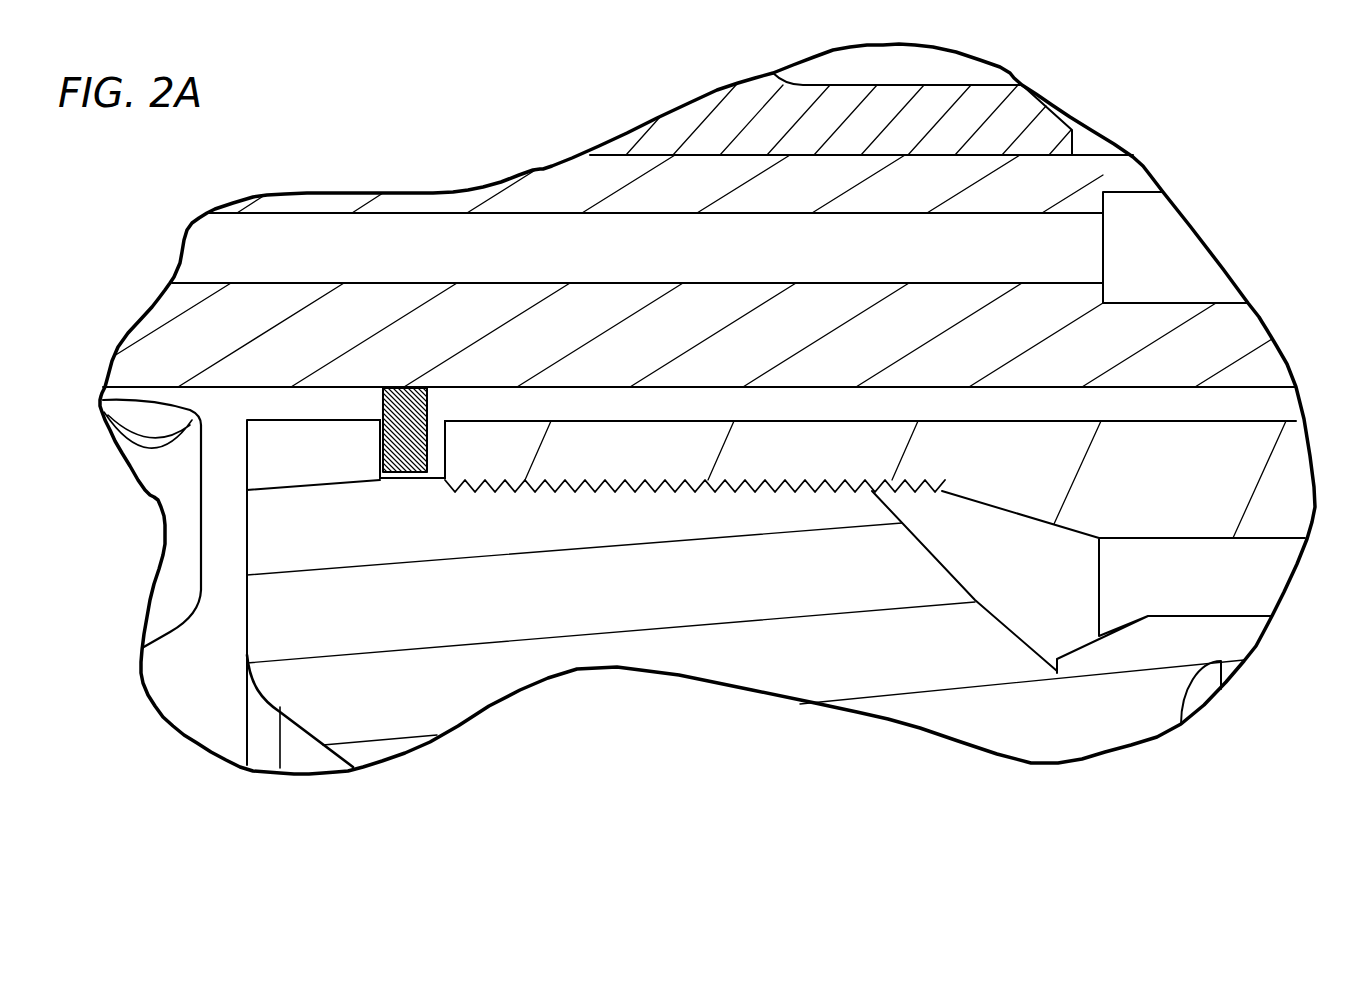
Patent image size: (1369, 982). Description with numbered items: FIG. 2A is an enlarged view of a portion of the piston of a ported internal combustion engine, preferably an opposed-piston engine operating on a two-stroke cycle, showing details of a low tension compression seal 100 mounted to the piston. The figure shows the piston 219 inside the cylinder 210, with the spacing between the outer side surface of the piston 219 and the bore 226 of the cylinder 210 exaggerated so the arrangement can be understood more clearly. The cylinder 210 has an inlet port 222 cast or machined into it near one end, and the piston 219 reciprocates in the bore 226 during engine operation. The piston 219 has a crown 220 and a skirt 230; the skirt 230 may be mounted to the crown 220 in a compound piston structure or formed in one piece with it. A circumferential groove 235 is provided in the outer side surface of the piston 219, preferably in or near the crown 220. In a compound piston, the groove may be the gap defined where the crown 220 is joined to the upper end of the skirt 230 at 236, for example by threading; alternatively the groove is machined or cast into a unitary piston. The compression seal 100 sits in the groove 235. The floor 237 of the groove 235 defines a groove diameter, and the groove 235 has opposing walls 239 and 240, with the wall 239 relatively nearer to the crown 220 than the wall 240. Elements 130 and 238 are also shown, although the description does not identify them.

The compression seal 100 is at (389, 403).
The mounting bracket 130 is at (438, 420).
The cylinder 210 is at (255, 388).
The piston 219 is at (228, 475).
The crown 220 is at (300, 740).
The inlet port 222 is at (184, 544).
The bore 226 is at (658, 388).
The skirt 230 is at (1195, 483).
The circumferential groove 235 is at (378, 492).
The joint between crown and skirt 236 is at (635, 491).
The floor 237 is at (433, 480).
The bracket base 238 is at (412, 480).
The wall 239 is at (378, 446).
The wall 240 is at (447, 453).